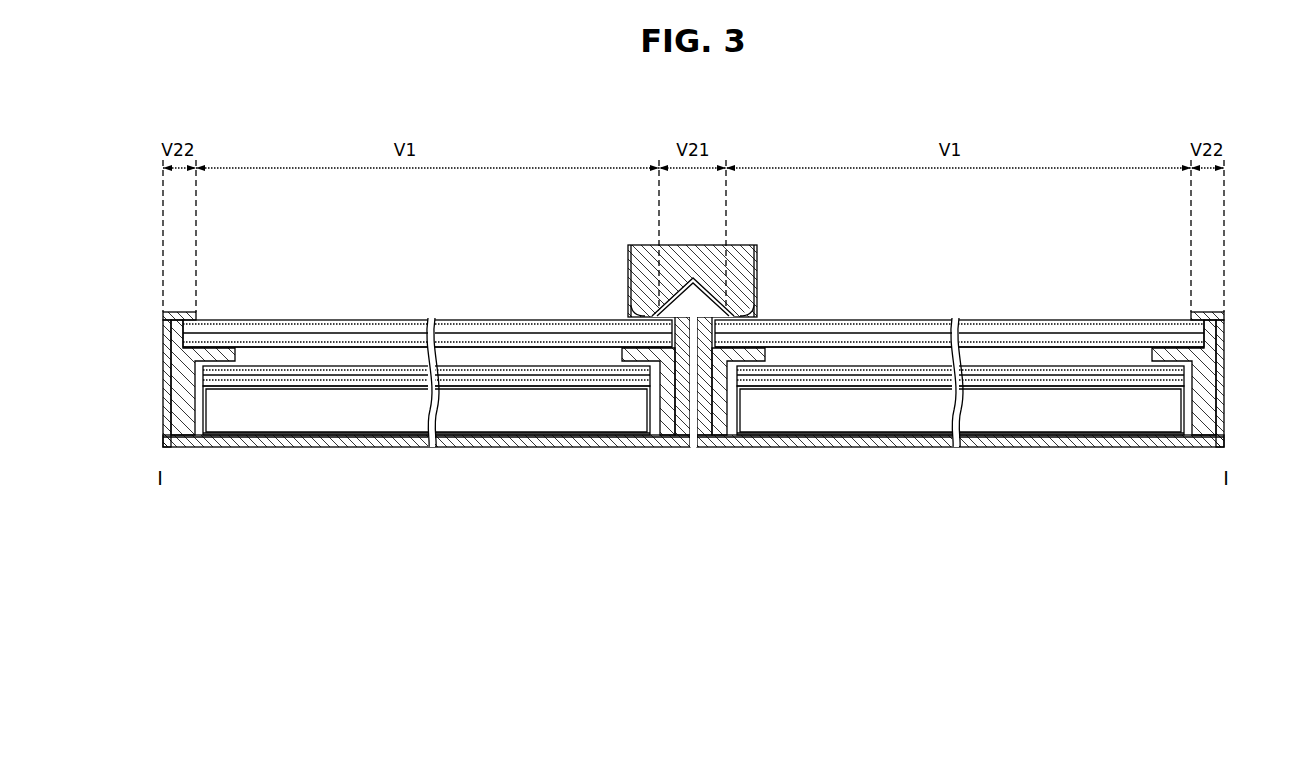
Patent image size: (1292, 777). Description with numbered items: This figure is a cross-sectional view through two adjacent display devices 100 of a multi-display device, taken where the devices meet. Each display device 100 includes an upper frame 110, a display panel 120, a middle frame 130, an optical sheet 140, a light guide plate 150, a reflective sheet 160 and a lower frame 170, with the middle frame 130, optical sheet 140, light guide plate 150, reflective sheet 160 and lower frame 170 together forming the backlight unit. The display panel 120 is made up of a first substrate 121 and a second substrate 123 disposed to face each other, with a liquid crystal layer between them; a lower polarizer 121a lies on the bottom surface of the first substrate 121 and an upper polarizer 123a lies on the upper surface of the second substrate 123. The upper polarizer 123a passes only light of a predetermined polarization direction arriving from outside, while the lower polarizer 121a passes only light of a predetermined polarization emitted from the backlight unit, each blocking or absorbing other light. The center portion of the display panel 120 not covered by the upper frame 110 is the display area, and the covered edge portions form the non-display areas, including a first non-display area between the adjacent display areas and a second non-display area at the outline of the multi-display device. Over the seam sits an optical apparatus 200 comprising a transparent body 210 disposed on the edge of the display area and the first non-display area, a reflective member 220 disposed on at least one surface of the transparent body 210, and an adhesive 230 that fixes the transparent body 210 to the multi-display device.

The display device 100 is at (501, 281).
The upper frame 110 is at (182, 312).
The display panel 120 is at (372, 276).
The first substrate 121 is at (320, 340).
The lower polarizer 121a is at (372, 347).
The second substrate 123 is at (276, 331).
The upper polarizer 123a is at (228, 321).
The middle frame 130 is at (186, 412).
The optical sheet 140 is at (206, 385).
The light guide plate 150 is at (321, 408).
The reflective sheet 160 is at (257, 436).
The lower frame 170 is at (510, 448).
The optical apparatus 200 is at (713, 312).
The transparent body 210 is at (740, 263).
The reflective member 220 is at (629, 263).
The adhesive 230 is at (633, 306).